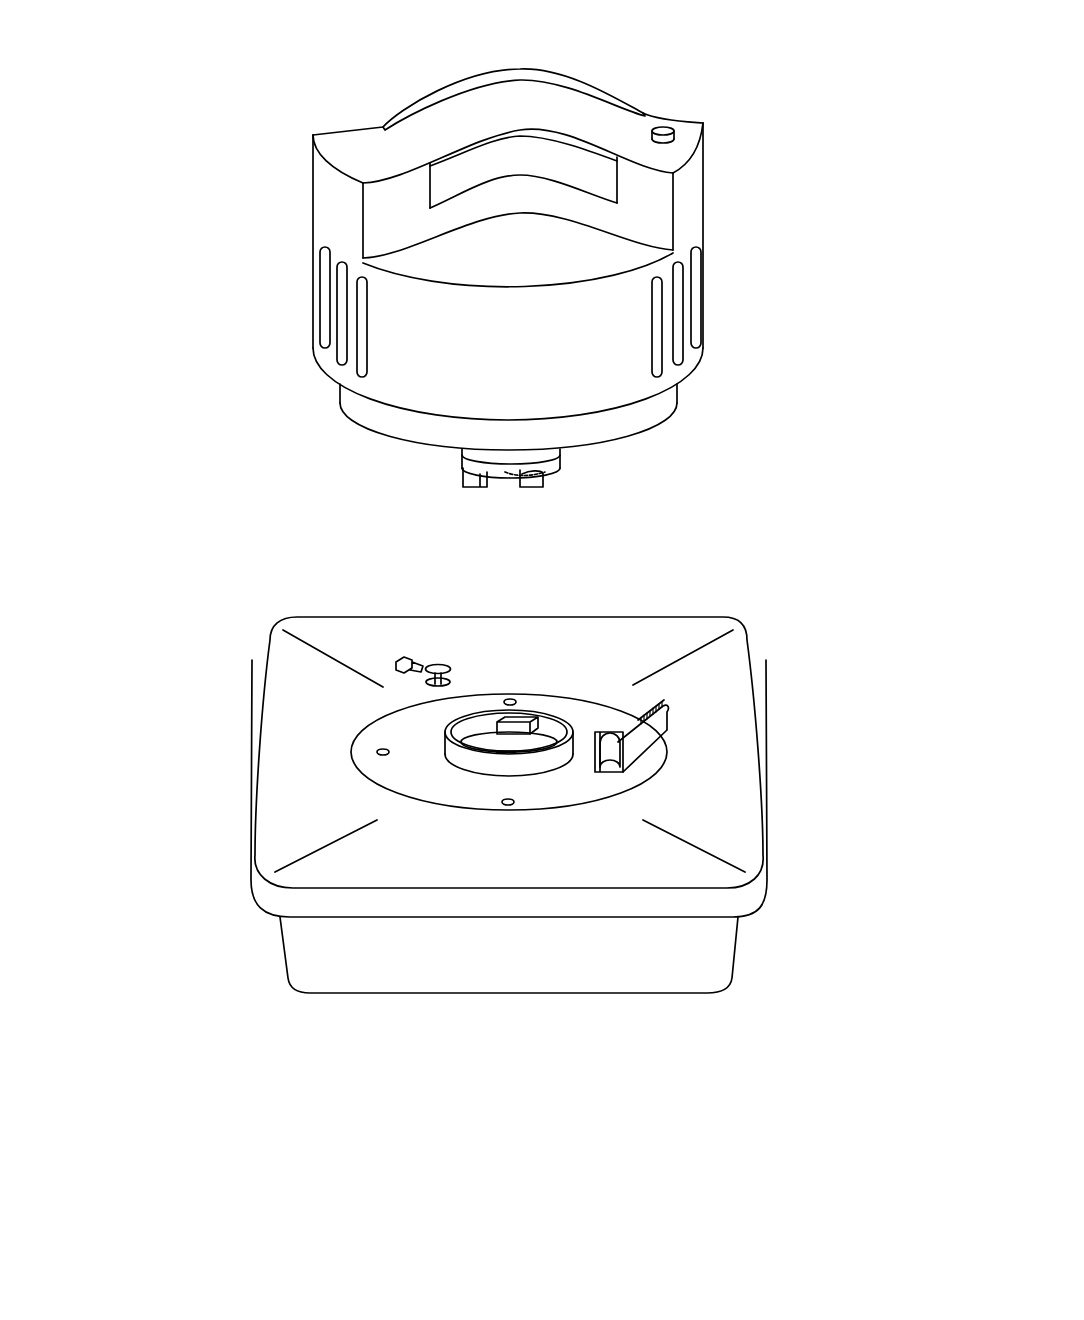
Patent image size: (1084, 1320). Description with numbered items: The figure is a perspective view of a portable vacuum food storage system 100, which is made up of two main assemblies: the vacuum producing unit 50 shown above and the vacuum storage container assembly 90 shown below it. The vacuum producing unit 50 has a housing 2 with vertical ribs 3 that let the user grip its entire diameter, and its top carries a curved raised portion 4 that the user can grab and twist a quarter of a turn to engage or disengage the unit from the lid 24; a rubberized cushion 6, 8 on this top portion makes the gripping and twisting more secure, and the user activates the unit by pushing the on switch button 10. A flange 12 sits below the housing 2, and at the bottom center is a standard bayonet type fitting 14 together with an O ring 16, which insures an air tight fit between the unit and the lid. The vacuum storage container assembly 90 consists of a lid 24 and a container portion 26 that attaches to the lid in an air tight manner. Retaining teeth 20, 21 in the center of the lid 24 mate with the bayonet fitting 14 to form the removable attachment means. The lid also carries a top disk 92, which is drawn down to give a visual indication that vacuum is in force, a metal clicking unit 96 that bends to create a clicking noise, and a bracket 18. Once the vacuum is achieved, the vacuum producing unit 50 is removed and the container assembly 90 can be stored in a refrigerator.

The portable vacuum food storage system 100 is at (160, 287).
The vacuum producing unit 50 is at (789, 37).
The housing 2 is at (397, 392).
The vertical ribs 3 is at (337, 313).
The curved raised portion 4 is at (338, 143).
The rubberized cushion 6 is at (485, 155).
The rubberized cushion 8 is at (525, 77).
The on switch button 10 is at (663, 130).
The flange 12 is at (617, 427).
The bayonet type fitting 14 is at (547, 477).
The O ring 16 is at (461, 465).
The vacuum storage container assembly 90 is at (789, 548).
The lid 24 is at (697, 627).
The container portion 26 is at (297, 962).
The retaining teeth 20 is at (522, 720).
The retaining teeth 21 is at (480, 745).
The top disk 92 is at (440, 668).
The metal clicking unit 96 is at (420, 657).
The bracket 18 is at (672, 717).